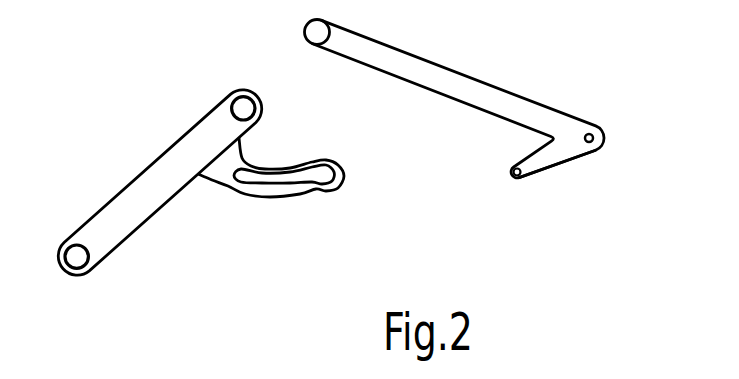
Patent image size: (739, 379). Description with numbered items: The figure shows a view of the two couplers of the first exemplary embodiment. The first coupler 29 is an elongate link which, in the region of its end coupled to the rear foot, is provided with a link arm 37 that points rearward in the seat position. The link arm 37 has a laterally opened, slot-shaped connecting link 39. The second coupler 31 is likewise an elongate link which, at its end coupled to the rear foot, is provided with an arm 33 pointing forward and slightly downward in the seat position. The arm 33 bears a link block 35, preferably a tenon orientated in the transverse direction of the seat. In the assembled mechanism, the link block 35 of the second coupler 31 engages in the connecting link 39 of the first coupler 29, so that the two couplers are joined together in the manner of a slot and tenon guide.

The first coupler 29 is at (150, 223).
The second coupler 31 is at (462, 102).
The arm 33 is at (557, 148).
The link block 35 is at (517, 177).
The link arm 37 is at (220, 178).
The connecting link 39 is at (300, 180).